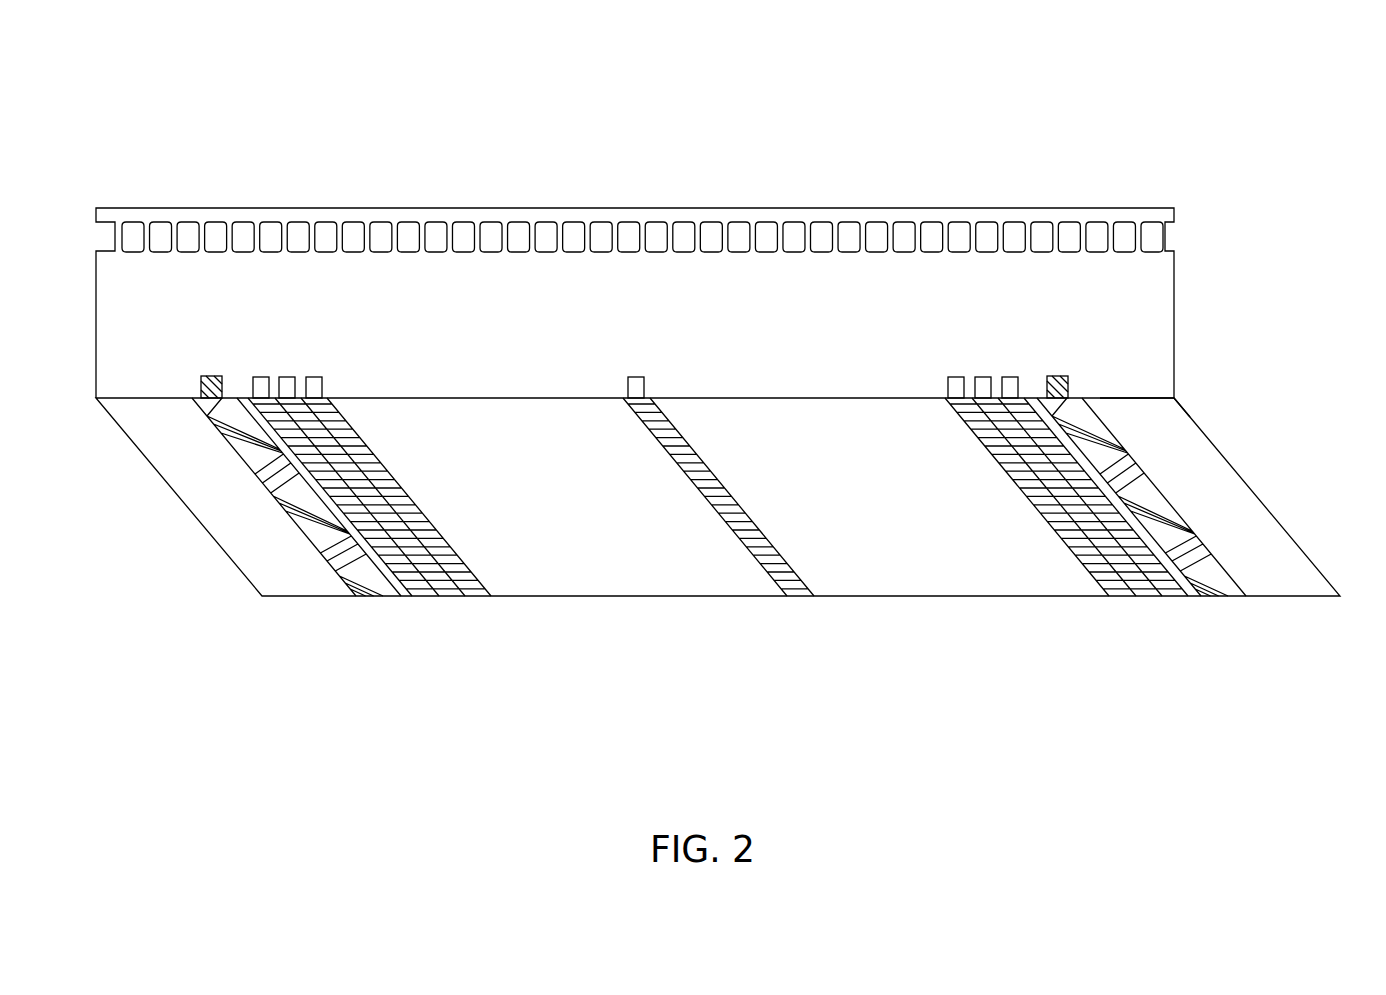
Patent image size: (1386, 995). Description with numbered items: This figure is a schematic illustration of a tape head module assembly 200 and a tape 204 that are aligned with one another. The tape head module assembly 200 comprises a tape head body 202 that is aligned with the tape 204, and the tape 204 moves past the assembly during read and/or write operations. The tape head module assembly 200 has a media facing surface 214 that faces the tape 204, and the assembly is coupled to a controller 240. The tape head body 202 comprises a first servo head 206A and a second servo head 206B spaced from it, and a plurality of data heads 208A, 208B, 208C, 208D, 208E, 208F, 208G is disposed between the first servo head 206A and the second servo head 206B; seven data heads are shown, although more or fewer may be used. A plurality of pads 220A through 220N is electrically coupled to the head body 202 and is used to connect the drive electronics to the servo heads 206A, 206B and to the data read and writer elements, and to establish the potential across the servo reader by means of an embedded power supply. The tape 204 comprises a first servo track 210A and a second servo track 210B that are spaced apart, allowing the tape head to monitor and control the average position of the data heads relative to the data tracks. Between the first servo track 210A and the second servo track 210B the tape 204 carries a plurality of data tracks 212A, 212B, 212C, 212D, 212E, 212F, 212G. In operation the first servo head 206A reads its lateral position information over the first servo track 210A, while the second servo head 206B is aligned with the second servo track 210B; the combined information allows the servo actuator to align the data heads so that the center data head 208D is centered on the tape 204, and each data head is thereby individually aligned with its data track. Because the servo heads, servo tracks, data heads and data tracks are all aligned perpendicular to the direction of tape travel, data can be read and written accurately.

The tape head module assembly 200 is at (207, 60).
The tape head body 202 is at (1179, 290).
The tape 204 is at (1258, 497).
The first servo head 206A is at (213, 373).
The second servo head 206B is at (1057, 375).
The data head 208A is at (262, 375).
The data head 208B is at (290, 375).
The data head 208C is at (315, 375).
The data head 208D is at (634, 375).
The data head 208E is at (957, 375).
The data head 208F is at (983, 375).
The data head 208G is at (1010, 375).
The first servo track 210A is at (380, 598).
The second servo track 210B is at (1223, 598).
The data track 212A is at (427, 598).
The data track 212B is at (455, 598).
The data track 212C is at (483, 598).
The data track 212D is at (798, 598).
The data track 212E is at (1120, 598).
The data track 212F is at (1145, 598).
The data track 212G is at (1173, 598).
The media facing surface 214 is at (1126, 396).
The pad 220A is at (189, 221).
The pad 220N is at (1100, 221).
The controller 240 is at (1176, 398).